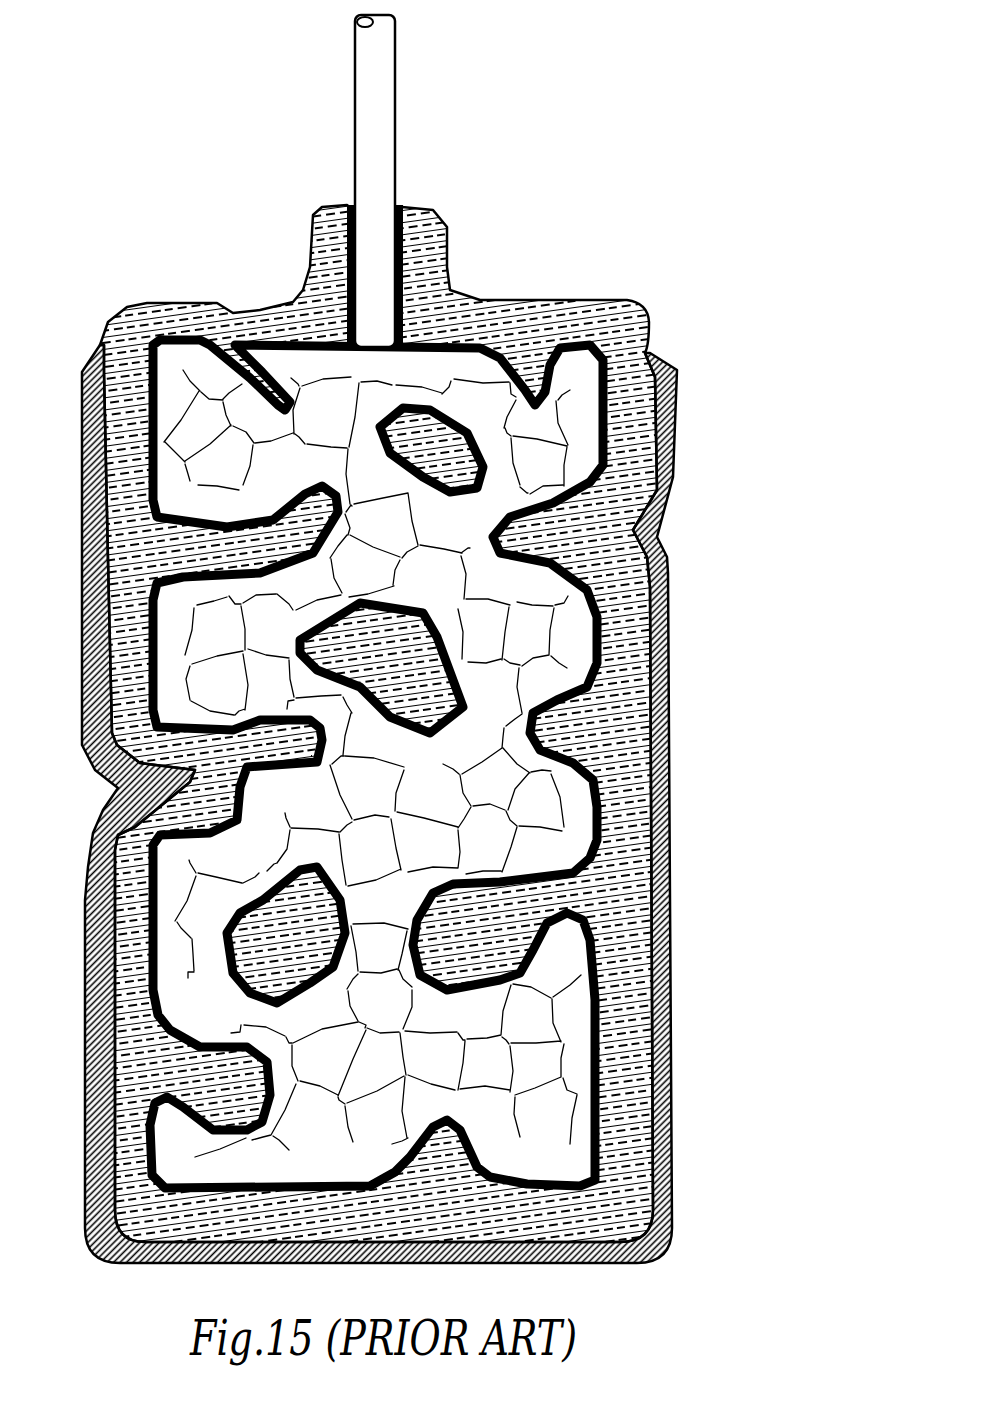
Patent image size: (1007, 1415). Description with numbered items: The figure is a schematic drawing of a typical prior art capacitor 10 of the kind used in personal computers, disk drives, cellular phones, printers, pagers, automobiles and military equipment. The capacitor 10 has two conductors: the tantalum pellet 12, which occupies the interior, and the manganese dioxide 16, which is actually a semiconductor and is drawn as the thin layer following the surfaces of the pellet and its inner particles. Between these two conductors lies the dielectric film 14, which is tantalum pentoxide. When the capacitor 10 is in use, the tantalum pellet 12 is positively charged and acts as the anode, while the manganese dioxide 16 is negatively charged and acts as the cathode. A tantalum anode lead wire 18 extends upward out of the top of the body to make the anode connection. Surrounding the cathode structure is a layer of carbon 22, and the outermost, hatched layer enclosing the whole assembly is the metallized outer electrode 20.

The capacitor 10 is at (423, 639).
The tantalum pellet 12 is at (530, 447).
The dielectric film 14 is at (460, 690).
The manganese dioxide 16 is at (420, 667).
The tantalum anode lead wire 18 is at (383, 147).
The metallized outer electrode 20 is at (667, 1170).
The layer of carbon 22 is at (627, 1013).